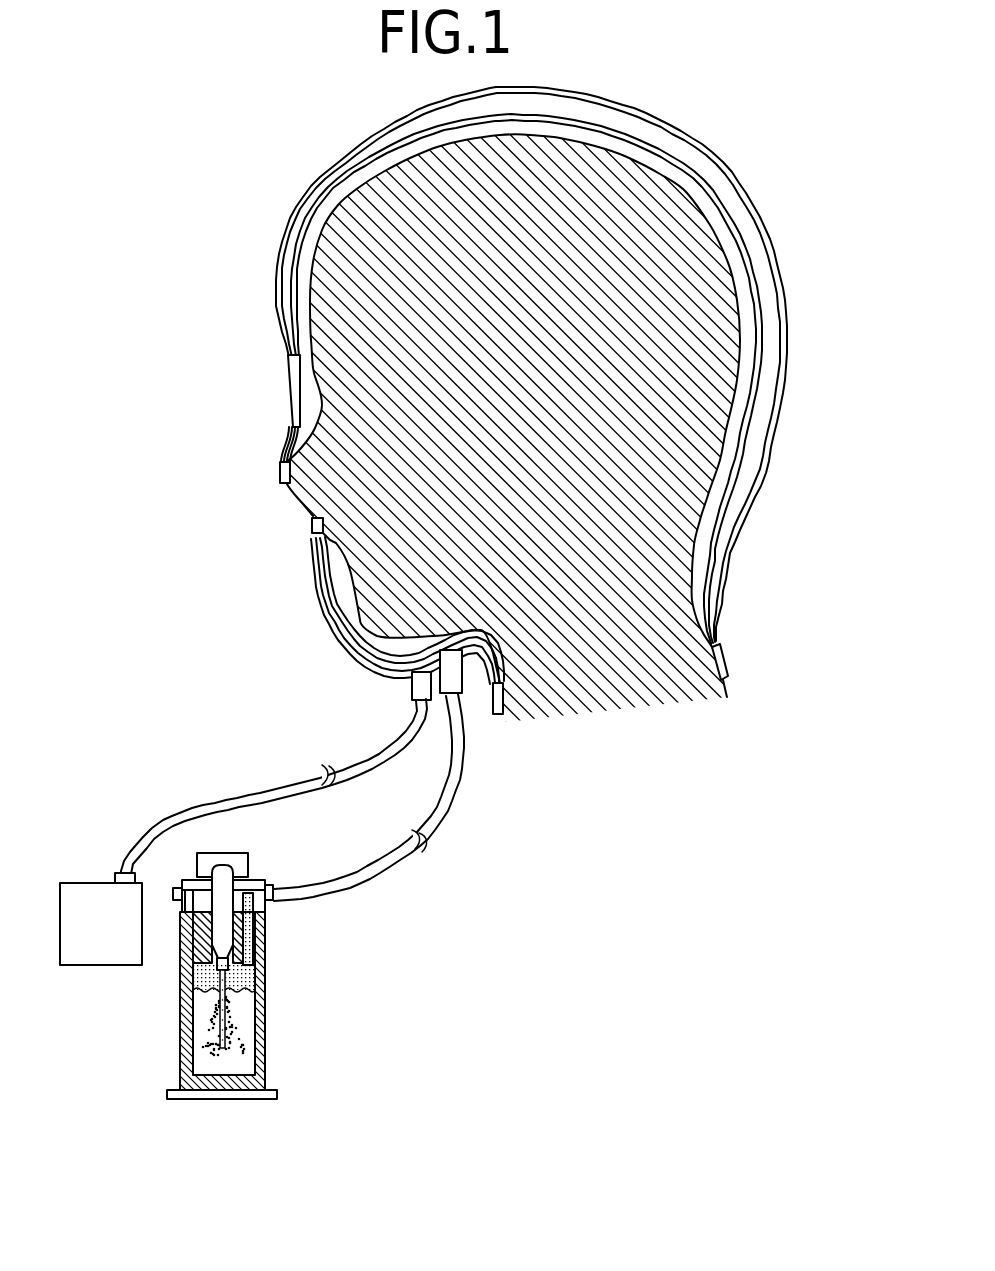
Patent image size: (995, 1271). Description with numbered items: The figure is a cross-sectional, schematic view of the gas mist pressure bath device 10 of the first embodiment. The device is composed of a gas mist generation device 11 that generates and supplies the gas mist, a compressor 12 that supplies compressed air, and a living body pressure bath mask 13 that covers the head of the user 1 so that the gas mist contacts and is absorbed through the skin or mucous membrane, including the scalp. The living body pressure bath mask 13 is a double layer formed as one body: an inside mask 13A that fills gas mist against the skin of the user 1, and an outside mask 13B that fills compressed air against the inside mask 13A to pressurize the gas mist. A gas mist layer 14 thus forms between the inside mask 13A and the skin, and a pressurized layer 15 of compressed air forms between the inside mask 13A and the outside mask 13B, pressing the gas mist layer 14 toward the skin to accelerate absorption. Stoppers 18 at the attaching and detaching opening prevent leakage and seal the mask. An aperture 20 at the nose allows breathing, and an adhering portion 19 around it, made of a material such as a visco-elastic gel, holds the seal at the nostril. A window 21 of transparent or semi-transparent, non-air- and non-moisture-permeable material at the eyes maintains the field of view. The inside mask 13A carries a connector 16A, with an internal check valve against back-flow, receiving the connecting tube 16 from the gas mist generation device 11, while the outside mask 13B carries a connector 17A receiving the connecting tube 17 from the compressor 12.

The user 1 is at (722, 461).
The gas mist pressure bath device 10 is at (173, 100).
The gas mist generation device 11 is at (266, 1042).
The compressor 12 is at (90, 882).
The living body pressure bath mask 13 is at (525, 395).
The inside mask 13A is at (727, 514).
The outside mask 13B is at (737, 563).
The gas mist layer 14 is at (308, 248).
The pressurized layer 15 is at (310, 208).
The connecting tube 16 is at (370, 888).
The connector 16A is at (470, 690).
The connecting tube 17 is at (245, 786).
The connector 17A is at (392, 687).
The stoppers 18 is at (734, 661).
The adhering portion 19 is at (280, 472).
The aperture 20 is at (290, 506).
The window 21 is at (288, 393).